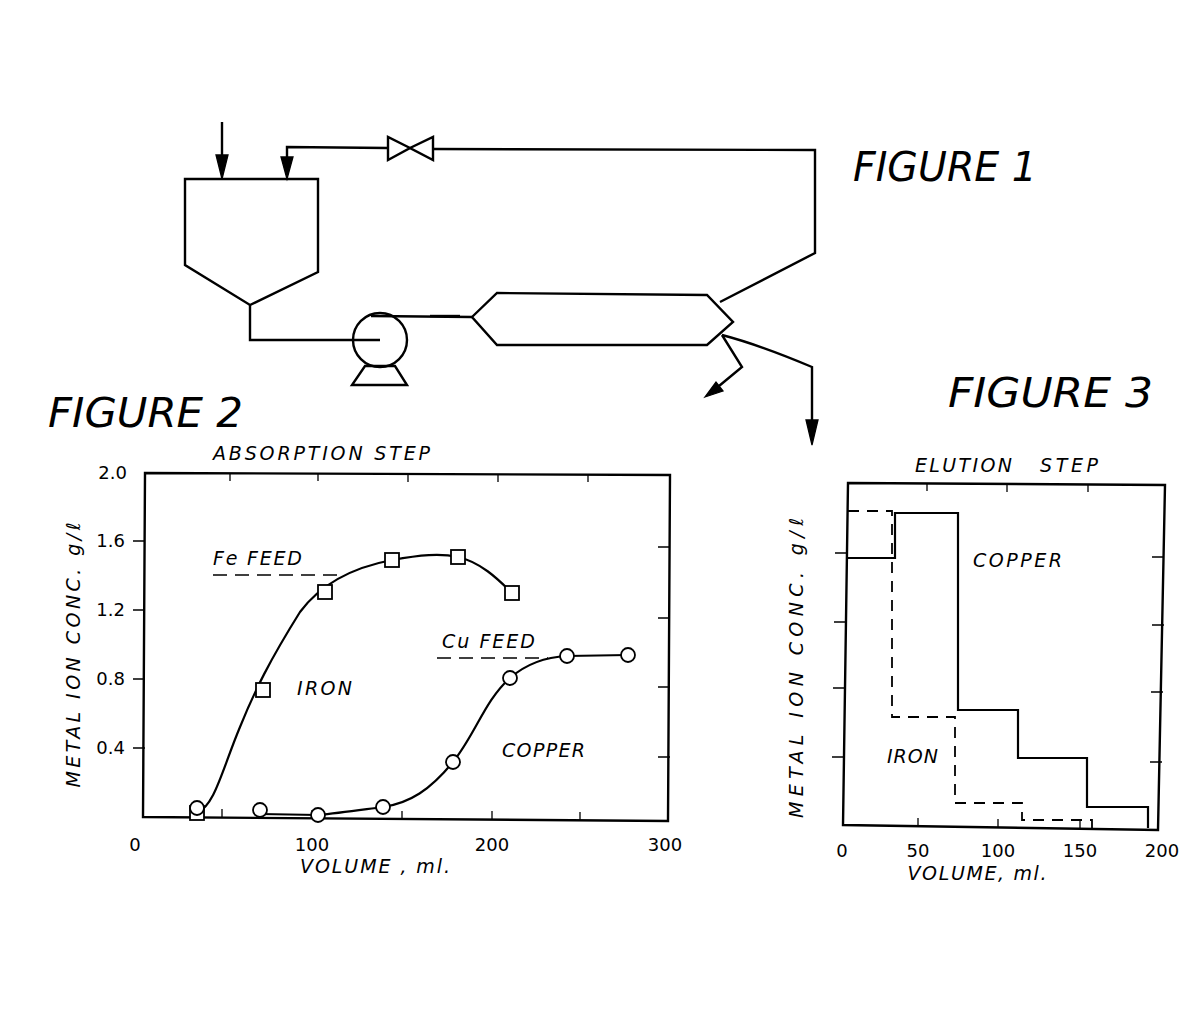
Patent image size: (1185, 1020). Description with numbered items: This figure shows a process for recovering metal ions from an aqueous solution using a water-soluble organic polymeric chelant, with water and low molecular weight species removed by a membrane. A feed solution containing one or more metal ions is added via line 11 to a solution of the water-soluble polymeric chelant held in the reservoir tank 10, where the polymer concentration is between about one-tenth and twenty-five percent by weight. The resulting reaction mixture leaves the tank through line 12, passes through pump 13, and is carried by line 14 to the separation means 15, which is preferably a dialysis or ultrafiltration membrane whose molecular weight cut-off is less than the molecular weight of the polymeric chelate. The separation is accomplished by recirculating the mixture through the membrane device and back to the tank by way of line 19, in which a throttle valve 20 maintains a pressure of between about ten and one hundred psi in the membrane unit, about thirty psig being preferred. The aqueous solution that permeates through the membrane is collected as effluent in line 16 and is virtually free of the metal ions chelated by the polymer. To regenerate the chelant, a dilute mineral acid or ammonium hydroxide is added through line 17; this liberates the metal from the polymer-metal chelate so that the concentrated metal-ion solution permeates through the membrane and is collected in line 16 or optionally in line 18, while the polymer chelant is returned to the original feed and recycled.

The tank 10 is at (318, 218).
The line 11 is at (227, 136).
The line 12 is at (313, 338).
The pump 13 is at (368, 318).
The line 14 is at (418, 319).
The separation means 15 is at (562, 292).
The line 16 is at (780, 358).
The line 17 is at (443, 308).
The line 18 is at (713, 352).
The line 19 is at (660, 150).
The throttle valve 20 is at (398, 138).